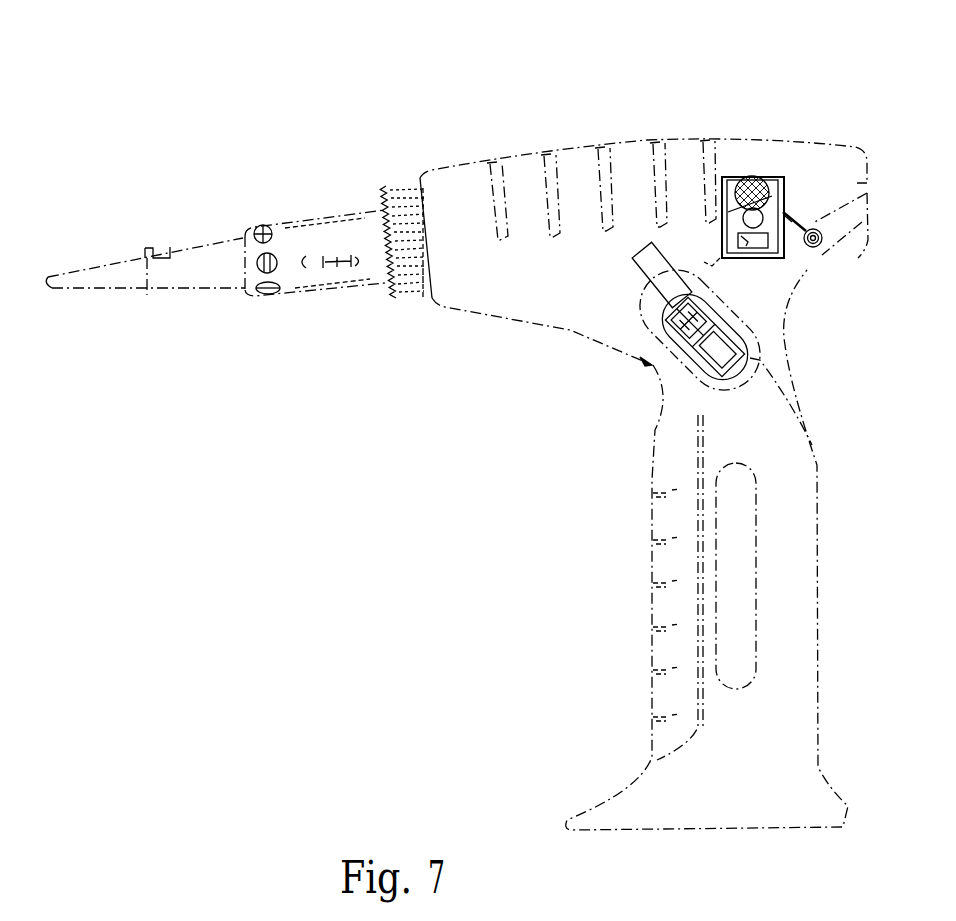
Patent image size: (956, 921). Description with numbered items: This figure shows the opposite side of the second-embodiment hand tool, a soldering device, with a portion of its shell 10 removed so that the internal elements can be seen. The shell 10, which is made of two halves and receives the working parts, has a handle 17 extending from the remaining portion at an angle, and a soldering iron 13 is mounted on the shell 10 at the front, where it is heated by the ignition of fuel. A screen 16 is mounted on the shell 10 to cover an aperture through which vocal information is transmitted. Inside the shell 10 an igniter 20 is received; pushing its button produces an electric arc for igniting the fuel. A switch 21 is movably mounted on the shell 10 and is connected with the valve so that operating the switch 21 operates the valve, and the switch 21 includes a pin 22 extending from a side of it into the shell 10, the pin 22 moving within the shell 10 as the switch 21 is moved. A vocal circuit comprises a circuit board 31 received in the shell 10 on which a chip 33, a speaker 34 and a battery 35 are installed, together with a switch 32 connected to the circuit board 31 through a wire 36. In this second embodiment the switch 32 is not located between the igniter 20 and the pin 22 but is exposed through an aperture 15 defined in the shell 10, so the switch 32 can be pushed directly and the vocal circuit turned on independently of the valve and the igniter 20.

The shell 10 is at (452, 173).
The soldering iron 13 is at (202, 257).
The aperture 15 is at (815, 250).
The screen 16 is at (753, 176).
The handle 17 is at (820, 612).
The igniter 20 is at (648, 265).
The switch 21 is at (730, 390).
The pin 22 is at (713, 380).
The circuit board 31 is at (792, 195).
The switch 32 is at (822, 250).
The chip 33 is at (718, 178).
The speaker 34 is at (740, 177).
The battery 35 is at (768, 177).
The wire 36 is at (818, 200).